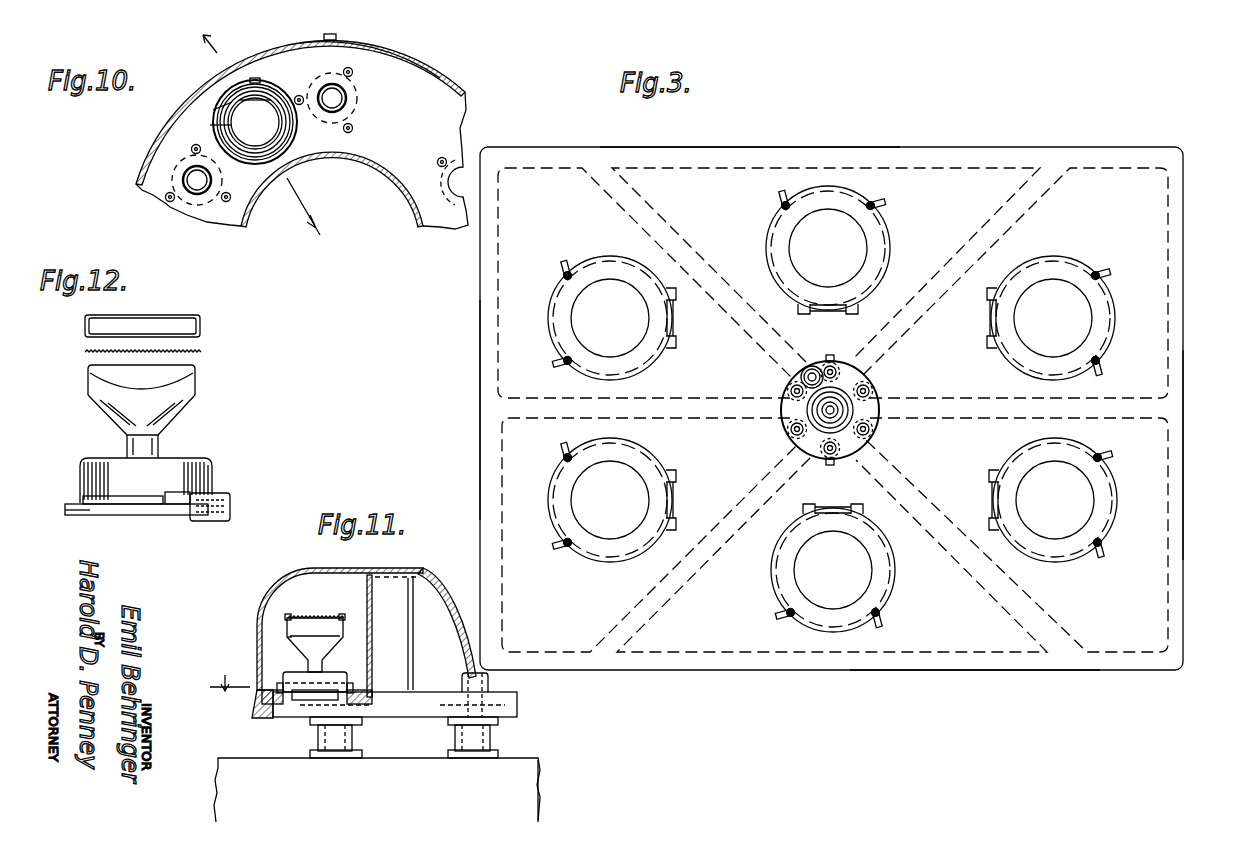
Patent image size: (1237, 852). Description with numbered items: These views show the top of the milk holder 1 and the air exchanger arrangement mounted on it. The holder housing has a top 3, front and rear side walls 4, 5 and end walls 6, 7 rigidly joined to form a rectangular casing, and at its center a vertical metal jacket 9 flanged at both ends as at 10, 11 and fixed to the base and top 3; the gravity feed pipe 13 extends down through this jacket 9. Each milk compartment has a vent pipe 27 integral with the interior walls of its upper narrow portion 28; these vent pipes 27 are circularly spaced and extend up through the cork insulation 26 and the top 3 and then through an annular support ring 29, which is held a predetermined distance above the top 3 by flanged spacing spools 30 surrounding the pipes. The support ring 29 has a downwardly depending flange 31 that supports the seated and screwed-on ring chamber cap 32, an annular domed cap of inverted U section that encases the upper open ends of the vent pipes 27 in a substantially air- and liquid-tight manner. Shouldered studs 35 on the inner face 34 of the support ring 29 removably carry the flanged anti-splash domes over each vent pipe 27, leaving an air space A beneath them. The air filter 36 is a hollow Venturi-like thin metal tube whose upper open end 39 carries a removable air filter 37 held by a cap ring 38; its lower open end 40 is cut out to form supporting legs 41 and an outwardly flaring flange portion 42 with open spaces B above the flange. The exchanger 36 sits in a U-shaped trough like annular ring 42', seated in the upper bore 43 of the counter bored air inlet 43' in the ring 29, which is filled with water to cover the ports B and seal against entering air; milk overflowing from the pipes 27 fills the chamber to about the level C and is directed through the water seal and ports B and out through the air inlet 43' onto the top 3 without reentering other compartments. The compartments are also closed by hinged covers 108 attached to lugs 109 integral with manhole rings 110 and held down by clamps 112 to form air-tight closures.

In FIG. 3, the milk holder 1 is at (747, 677).
In FIG. 11, the milk holder 1 is at (547, 787).
In FIG. 3, the top 3 is at (645, 283).
In FIG. 11, the top 3 is at (258, 760).
In FIG. 3, the front side wall 4 is at (985, 670).
In FIG. 3, the rear side wall 5 is at (746, 147).
In FIG. 3, the end wall 6 is at (480, 410).
In FIG. 3, the end wall 7 is at (1183, 463).
In FIG. 3, the vertical metal jacket 9 is at (836, 382).
In FIG. 11, the flange 10 is at (220, 684).
In FIG. 10, the flange 11 is at (254, 142).
In FIG. 3, the gravity feed pipe 13 is at (818, 422).
In FIG. 3, the cork insulation 26 is at (540, 398).
In FIG. 3, the vent pipe 27 is at (870, 388).
In FIG. 10, the vent pipe 27 is at (347, 98).
In FIG. 11, the vent pipe 27 is at (331, 760).
In FIG. 3, the upper narrow portion 28 is at (800, 410).
In FIG. 3, the annular support ring 29 is at (796, 384).
In FIG. 10, the annular support ring 29 is at (434, 74).
In FIG. 11, the annular support ring 29 is at (428, 724).
In FIG. 10, the flanged spacing spool 30 is at (352, 112).
In FIG. 11, the flanged spacing spool 30 is at (318, 740).
In FIG. 11, the downwardly depending flange 31 is at (257, 702).
In FIG. 10, the ring chamber cap 32 is at (458, 85).
In FIG. 11, the ring chamber cap 32 is at (276, 624).
In FIG. 10, the inner face 34 is at (335, 158).
In FIG. 11, the inner face 34 is at (418, 688).
In FIG. 10, the shouldered stud 35 is at (298, 96).
In FIG. 3, the air filter 36 is at (806, 368).
In FIG. 10, the air filter 36 is at (290, 128).
In FIG. 12, the air filter 36 is at (197, 414).
In FIG. 11, the air filter 36 is at (330, 645).
In FIG. 12, the removable air filter 37 is at (200, 353).
In FIG. 11, the removable air filter 37 is at (305, 618).
In FIG. 12, the cap ring 38 is at (200, 322).
In FIG. 11, the cap ring 38 is at (344, 616).
In FIG. 12, the upper open end 39 is at (200, 380).
In FIG. 10, the lower open end 40 is at (268, 138).
In FIG. 12, the lower open end 40 is at (155, 495).
In FIG. 10, the supporting leg 41 is at (256, 80).
In FIG. 12, the supporting leg 41 is at (130, 508).
In FIG. 10, the flange portion 42 is at (196, 95).
In FIG. 12, the flange portion 42 is at (123, 526).
In FIG. 10, the trough like annular ring 42' is at (202, 126).
In FIG. 12, the trough like annular ring 42' is at (228, 507).
In FIG. 10, the upper bore 43 is at (255, 144).
In FIG. 11, the upper bore 43 is at (324, 718).
In FIG. 10, the counter bored air inlet 43' is at (254, 109).
In FIG. 11, the counter bored air inlet 43' is at (305, 719).
In FIG. 3, the hinged cover 108 is at (650, 265).
In FIG. 3, the lug 109 is at (858, 290).
In FIG. 3, the manhole ring 110 is at (888, 260).
In FIG. 3, the clamp 112 is at (860, 200).
In FIG. 11, the air space A is at (278, 640).
In FIG. 12, the open spaces B is at (80, 508).
In FIG. 11, the level C is at (305, 678).